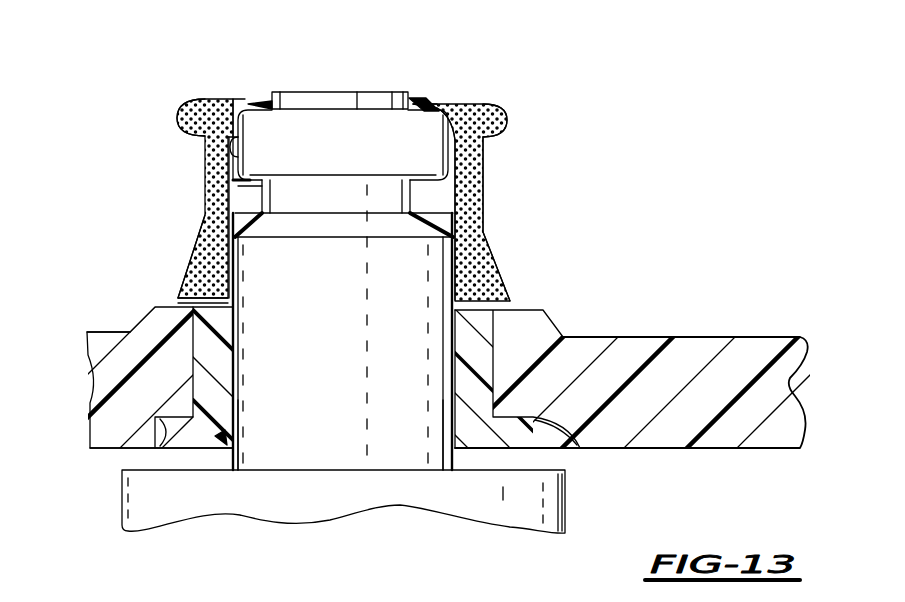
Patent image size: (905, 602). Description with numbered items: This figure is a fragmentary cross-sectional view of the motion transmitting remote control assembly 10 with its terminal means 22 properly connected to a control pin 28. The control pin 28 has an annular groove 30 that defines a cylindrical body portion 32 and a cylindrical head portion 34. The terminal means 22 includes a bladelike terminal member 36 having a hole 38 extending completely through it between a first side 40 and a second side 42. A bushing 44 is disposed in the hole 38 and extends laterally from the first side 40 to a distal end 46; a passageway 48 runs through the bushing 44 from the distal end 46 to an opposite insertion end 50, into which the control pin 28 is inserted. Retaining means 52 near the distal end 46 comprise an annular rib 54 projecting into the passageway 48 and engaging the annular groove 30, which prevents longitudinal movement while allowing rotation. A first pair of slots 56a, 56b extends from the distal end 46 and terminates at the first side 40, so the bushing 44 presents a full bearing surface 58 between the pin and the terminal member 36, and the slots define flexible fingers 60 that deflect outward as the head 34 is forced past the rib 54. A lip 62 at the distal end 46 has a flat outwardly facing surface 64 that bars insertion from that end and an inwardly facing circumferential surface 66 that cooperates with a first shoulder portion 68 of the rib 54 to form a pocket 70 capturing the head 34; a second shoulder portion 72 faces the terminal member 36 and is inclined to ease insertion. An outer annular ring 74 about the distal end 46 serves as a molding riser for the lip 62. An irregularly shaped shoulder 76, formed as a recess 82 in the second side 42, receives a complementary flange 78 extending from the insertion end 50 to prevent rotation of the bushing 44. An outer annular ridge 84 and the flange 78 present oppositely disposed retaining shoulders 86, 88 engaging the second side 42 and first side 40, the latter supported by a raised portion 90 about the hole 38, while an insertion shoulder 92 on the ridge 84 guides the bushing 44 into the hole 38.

The motion transmitting remote control assembly 10 is at (540, 280).
The terminal means 22 is at (685, 330).
The control pin 28 is at (340, 92).
The annular groove 30 is at (470, 218).
The cylindrical body portion 32 is at (418, 262).
The cylindrical head portion 34 is at (485, 147).
The terminal member 36 is at (742, 337).
The hole 38 is at (88, 364).
The first side 40 is at (88, 334).
The second side 42 is at (125, 448).
The bushing 44 is at (513, 100).
The distal end 46 is at (212, 97).
The passageway 48 is at (455, 323).
The insertion end 50 is at (187, 455).
The retaining means 52 is at (268, 200).
The annular rib 54 is at (236, 199).
The slot 56a is at (235, 140).
The slot 56b is at (484, 148).
The full bearing surface 58 is at (233, 409).
The flexible fingers 60 is at (202, 252).
The lip 62 is at (421, 99).
The flat outwardly facing surface 64 is at (471, 104).
The inwardly facing circumferential surface 66 is at (441, 104).
The first shoulder portion 68 is at (238, 186).
The pocket 70 is at (232, 124).
The second shoulder portion 72 is at (240, 208).
The outer annular ring 74 is at (507, 128).
The irregularly shaped shoulder 76 is at (517, 458).
The flange 78 is at (575, 433).
The recess 82 is at (150, 450).
The outer annular ridge 84 is at (188, 298).
The retaining shoulder 86 is at (90, 426).
The retaining shoulder 88 is at (170, 307).
The raised portion 90 is at (546, 307).
The insertion shoulder 92 is at (202, 270).